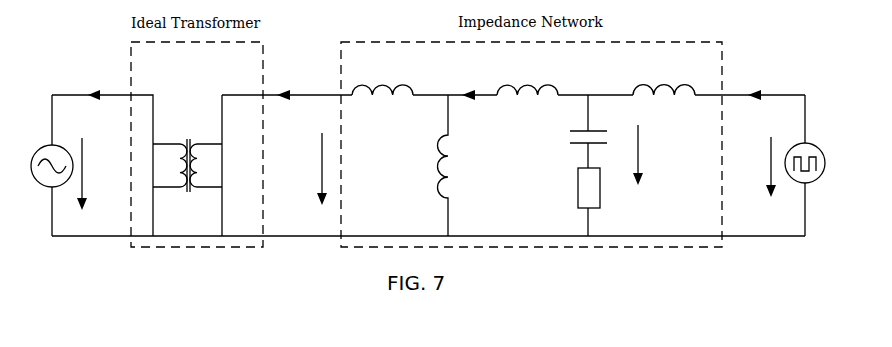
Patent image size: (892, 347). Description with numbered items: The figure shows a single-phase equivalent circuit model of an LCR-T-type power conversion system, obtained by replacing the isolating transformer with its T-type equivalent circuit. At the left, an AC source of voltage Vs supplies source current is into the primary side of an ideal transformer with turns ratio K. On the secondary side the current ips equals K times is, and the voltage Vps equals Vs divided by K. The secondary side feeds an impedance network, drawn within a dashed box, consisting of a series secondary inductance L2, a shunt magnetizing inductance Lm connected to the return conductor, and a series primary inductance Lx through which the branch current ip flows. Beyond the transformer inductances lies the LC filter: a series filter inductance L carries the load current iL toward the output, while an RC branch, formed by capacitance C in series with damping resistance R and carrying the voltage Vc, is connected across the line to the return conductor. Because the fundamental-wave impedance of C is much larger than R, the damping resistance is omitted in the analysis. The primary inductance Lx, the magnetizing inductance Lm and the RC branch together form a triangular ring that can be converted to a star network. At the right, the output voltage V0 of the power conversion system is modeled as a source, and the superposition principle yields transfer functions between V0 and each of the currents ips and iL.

The source voltage Vs is at (69, 174).
The source current is is at (92, 83).
The secondary-side current ips is at (288, 83).
The secondary-side voltage Vps is at (307, 169).
The secondary inductance L2 is at (382, 78).
The primary branch current ip is at (469, 83).
The primary inductance Lx is at (527, 78).
The magnetizing inductance Lm is at (459, 165).
The filter inductance L is at (664, 77).
The filter capacitance C is at (599, 131).
The damping resistance R is at (600, 202).
The capacitor voltage Vc is at (648, 155).
The load current iL is at (757, 82).
The output voltage V0 is at (785, 167).